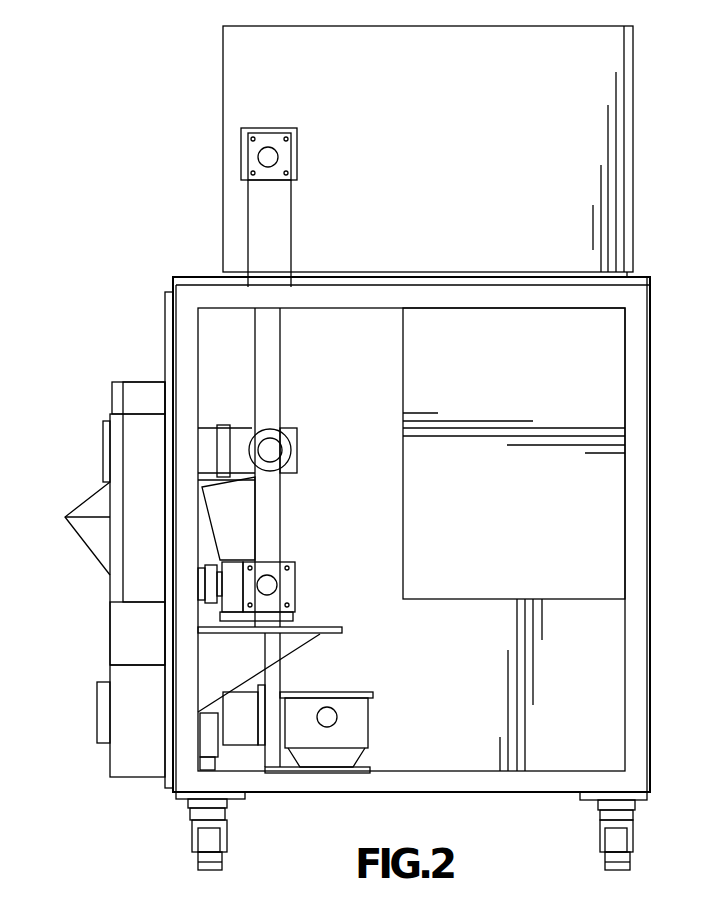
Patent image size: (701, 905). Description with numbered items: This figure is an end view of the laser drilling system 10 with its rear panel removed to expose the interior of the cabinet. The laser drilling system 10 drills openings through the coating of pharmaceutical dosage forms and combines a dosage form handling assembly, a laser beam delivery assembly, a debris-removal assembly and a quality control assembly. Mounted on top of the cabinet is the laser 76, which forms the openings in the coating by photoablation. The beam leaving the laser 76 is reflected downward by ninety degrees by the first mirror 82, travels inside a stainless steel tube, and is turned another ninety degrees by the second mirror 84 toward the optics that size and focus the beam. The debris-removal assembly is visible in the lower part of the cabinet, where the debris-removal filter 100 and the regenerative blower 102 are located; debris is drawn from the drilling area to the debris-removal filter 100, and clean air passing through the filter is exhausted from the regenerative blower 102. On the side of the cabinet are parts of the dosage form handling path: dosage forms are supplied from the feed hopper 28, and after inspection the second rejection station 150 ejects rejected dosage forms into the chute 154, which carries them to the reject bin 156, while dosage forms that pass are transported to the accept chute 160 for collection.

The laser drilling system 10 is at (150, 106).
The laser 76 is at (446, 157).
The first mirror 82 is at (278, 157).
The second rejection station 150 is at (106, 398).
The chute 154 is at (142, 388).
The reject bin 156 is at (137, 582).
The accept chute 160 is at (130, 638).
The feed hopper 28 is at (82, 542).
The second mirror 84 is at (278, 585).
The regenerative blower 102 is at (238, 702).
The debris-removal filter 100 is at (373, 722).